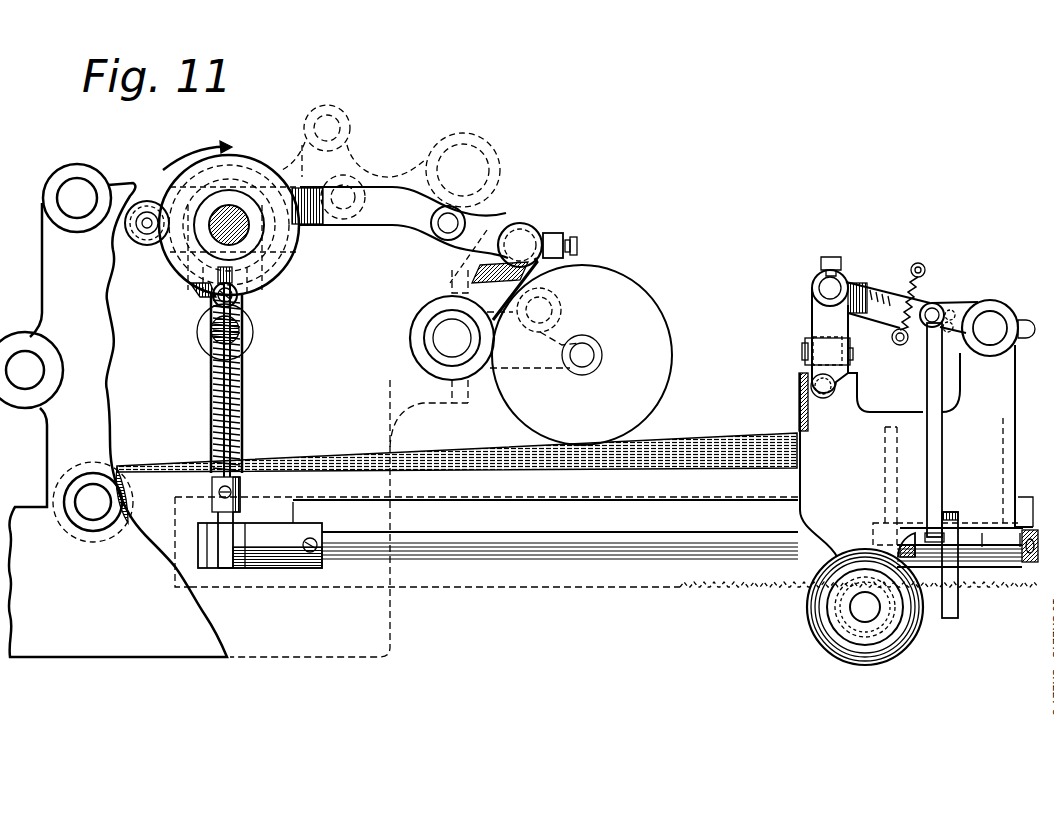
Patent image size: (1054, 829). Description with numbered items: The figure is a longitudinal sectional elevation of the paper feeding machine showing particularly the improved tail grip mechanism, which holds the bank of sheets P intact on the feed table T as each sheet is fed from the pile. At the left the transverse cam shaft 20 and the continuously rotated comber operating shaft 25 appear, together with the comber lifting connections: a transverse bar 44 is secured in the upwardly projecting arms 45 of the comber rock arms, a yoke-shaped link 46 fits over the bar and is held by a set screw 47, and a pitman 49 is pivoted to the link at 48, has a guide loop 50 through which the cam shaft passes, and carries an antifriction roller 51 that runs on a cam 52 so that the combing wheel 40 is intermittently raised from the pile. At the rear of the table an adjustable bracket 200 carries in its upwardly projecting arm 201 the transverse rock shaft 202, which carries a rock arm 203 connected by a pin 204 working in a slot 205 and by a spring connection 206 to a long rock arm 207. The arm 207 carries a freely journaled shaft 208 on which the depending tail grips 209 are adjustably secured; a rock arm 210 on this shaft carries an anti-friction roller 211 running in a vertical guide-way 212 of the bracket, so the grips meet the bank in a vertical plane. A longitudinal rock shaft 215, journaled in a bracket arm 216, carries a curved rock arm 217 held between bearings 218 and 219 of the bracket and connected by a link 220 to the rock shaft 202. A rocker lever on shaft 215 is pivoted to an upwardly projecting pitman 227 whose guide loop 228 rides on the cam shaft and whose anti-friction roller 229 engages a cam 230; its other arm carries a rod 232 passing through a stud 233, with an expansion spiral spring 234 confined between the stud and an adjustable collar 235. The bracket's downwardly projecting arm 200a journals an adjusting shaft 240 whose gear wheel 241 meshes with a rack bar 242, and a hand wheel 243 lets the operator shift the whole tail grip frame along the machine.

The cam shaft 20 is at (217, 213).
The comber operating shaft 25 is at (445, 342).
The sheet combing wheel 40 is at (650, 317).
The transverse bar 44 is at (566, 236).
The upwardly projecting arm 45 is at (482, 282).
The yoke-shaped link 46 is at (540, 216).
The set screw 47 is at (578, 246).
The pivot 48 is at (452, 220).
The pitman 49 is at (385, 197).
The guide loop 50 is at (265, 210).
The antifriction roller 51 is at (148, 203).
The cam 52 is at (253, 157).
The adjustable bracket 200 is at (978, 470).
The downwardly projecting arm 200a is at (843, 537).
The upwardly projecting arm 201 is at (940, 365).
The rock shaft 202 is at (990, 333).
The rock arm 203 is at (937, 310).
The pin 204 is at (951, 315).
The slot 205 is at (953, 324).
The spring connection 206 is at (900, 298).
The long rock arm 207 is at (855, 282).
The freely journaled shaft 208 is at (822, 288).
The tail grip 209 is at (803, 352).
The rock arm 210 is at (812, 318).
The anti-friction roller 211 is at (812, 392).
The vertical guide-way 212 is at (970, 375).
The rock shaft 215 is at (477, 525).
The bracket arm 216 is at (273, 552).
The rock arm 217 is at (965, 545).
The bearing 218 is at (1010, 548).
The bearing 219 is at (895, 568).
The link 220 is at (943, 481).
The pitman 227 is at (212, 444).
The guide loop 228 is at (212, 293).
The anti-friction roller 229 is at (248, 343).
The cam 230 is at (290, 253).
The rod 232 is at (217, 527).
The stud 233 is at (210, 318).
The expansion spiral spring 234 is at (243, 404).
The adjustable collar 235 is at (238, 487).
The adjusting shaft 240 is at (866, 610).
The gear wheel 241 is at (883, 628).
The rack bar 242 is at (808, 562).
The hand wheel 243 is at (888, 663).
The bank of sheets P is at (668, 447).
The feed table T is at (657, 530).